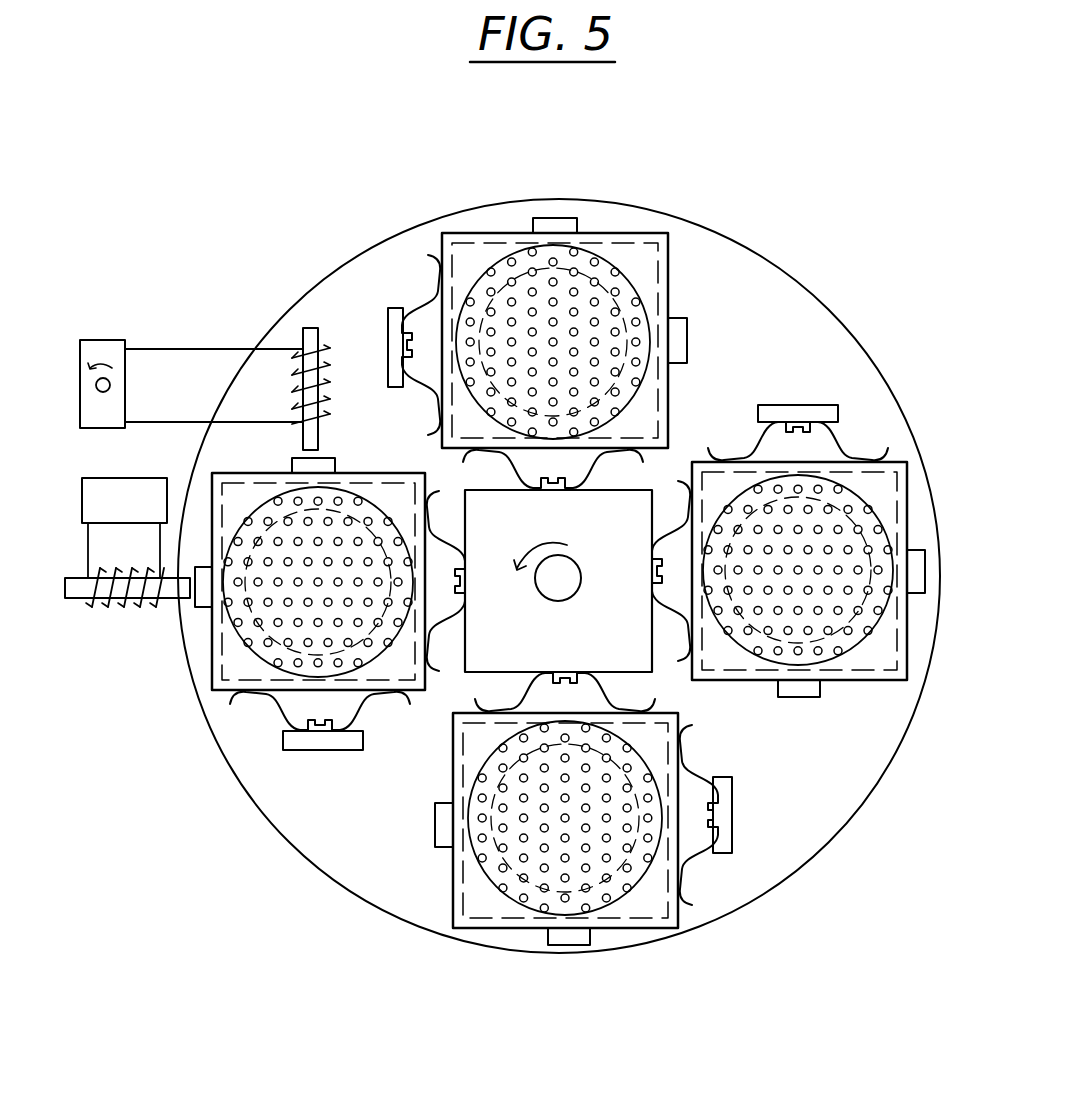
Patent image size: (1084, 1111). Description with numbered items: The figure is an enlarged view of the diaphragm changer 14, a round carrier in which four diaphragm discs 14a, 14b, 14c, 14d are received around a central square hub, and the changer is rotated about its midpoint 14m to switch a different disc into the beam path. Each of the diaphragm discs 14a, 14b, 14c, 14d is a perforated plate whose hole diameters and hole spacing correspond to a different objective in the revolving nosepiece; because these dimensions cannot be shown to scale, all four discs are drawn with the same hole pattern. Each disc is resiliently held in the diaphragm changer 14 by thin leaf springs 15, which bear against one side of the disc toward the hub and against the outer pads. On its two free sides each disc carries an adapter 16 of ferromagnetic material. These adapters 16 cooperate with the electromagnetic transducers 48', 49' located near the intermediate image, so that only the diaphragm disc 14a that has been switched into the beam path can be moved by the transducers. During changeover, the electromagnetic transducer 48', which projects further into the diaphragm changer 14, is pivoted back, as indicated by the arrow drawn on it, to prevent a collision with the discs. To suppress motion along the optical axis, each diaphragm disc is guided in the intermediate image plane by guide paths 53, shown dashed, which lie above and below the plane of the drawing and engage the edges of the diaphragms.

The diaphragm changer 14 is at (777, 298).
The midpoint 14m is at (562, 592).
The diaphragm disc 14a is at (222, 670).
The diaphragm disc 14b is at (662, 912).
The diaphragm disc 14c is at (800, 688).
The diaphragm disc 14d is at (655, 252).
The leaf spring 15 is at (440, 262).
The adapter 16 is at (560, 215).
The guide path 53 is at (473, 240).
The electromagnetic transducer 48' is at (205, 353).
The electromagnetic transducer 49' is at (127, 576).